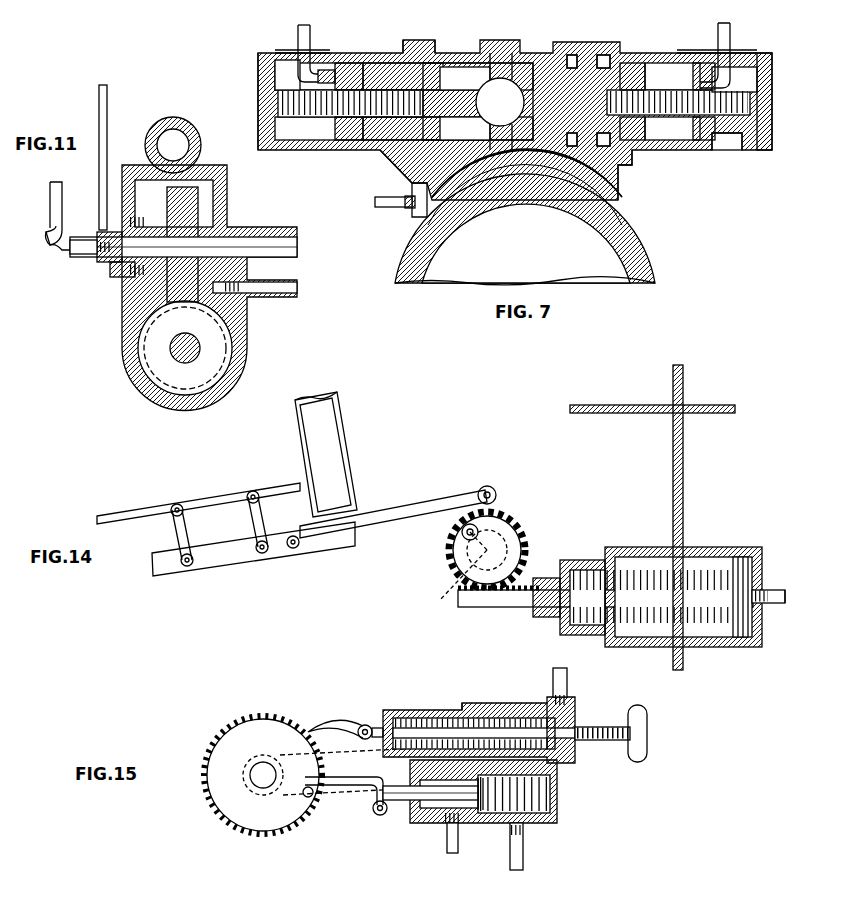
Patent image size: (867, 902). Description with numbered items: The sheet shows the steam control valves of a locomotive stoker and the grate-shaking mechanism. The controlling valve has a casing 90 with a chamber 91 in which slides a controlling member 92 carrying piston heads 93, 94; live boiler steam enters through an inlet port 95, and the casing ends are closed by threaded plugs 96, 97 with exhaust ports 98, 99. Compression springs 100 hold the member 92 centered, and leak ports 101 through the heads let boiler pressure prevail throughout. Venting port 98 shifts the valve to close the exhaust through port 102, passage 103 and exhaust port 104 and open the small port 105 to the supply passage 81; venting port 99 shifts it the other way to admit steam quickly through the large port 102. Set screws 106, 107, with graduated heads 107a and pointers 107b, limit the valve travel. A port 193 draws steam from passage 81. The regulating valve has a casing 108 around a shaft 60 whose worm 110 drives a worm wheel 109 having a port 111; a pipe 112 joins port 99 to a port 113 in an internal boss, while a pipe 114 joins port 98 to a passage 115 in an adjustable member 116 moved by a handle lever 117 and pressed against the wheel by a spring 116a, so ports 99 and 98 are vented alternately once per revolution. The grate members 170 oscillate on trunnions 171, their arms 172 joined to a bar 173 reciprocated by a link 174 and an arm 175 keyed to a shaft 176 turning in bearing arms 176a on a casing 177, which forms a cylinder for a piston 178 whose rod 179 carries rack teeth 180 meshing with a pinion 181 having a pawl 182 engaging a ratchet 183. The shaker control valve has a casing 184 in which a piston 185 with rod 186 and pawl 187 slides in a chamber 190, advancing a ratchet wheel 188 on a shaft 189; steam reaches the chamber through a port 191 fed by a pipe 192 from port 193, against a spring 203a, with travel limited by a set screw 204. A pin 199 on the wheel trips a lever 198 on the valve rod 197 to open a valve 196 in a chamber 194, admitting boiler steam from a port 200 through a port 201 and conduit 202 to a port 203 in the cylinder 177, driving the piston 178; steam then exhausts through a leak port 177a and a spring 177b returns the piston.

In FIG. 11, the shaft 60 is at (196, 345).
In FIG. 7, the supply passage 81 is at (508, 186).
In FIG. 7, the casing 90 is at (482, 66).
In FIG. 7, the chamber 91 is at (355, 65).
In FIG. 7, the controlling member 92 is at (478, 101).
In FIG. 7, the piston head 93 is at (400, 63).
In FIG. 7, the piston head 94 is at (635, 63).
In FIG. 7, the inlet port 95 is at (528, 66).
In FIG. 7, the threaded plug 96 is at (315, 142).
In FIG. 7, the threaded plug 97 is at (715, 140).
In FIG. 7, the exhaust port 98 is at (330, 70).
In FIG. 7, the exhaust port 99 is at (703, 63).
In FIG. 7, the compression spring 100 is at (342, 135).
In FIG. 7, the leak port 101 is at (443, 62).
In FIG. 7, the port 102 is at (572, 172).
In FIG. 7, the passage 103 is at (627, 168).
In FIG. 7, the exhaust port 104 is at (590, 82).
In FIG. 7, the port 105 is at (412, 192).
In FIG. 7, the set screw 106 is at (292, 96).
In FIG. 7, the set screw 107 is at (745, 115).
In FIG. 7, the graduated head 107a is at (258, 72).
In FIG. 7, the pointer 107b is at (292, 50).
In FIG. 11, the casing 108 is at (122, 328).
In FIG. 11, the worm wheel 109 is at (190, 225).
In FIG. 11, the worm 110 is at (205, 380).
In FIG. 11, the port 111 is at (205, 208).
In FIG. 7, the pipe 112 is at (730, 30).
In FIG. 11, the pipe 112 is at (295, 293).
In FIG. 11, the port 113 is at (240, 300).
In FIG. 7, the pipe 114 is at (304, 25).
In FIG. 11, the pipe 114 is at (50, 207).
In FIG. 11, the passage 115 is at (150, 185).
In FIG. 11, the adjustable member 116 is at (95, 260).
In FIG. 11, the spring 116a is at (122, 290).
In FIG. 11, the handle lever 117 is at (104, 126).
In FIG. 14, the grate member 170 is at (226, 498).
In FIG. 14, the trunnion 171 is at (255, 495).
In FIG. 14, the arm 172 is at (262, 520).
In FIG. 14, the bar 173 is at (218, 556).
In FIG. 14, the link 174 is at (383, 516).
In FIG. 14, the arm 175 is at (496, 497).
In FIG. 14, the shaft 176 is at (500, 545).
In FIG. 14, the bearing arm 176a is at (545, 575).
In FIG. 14, the casing 177 is at (627, 556).
In FIG. 14, the leak port 177a is at (750, 642).
In FIG. 14, the spring 177b is at (669, 640).
In FIG. 14, the piston 178 is at (745, 560).
In FIG. 14, the piston rod 179 is at (688, 590).
In FIG. 14, the rack teeth 180 is at (527, 607).
In FIG. 14, the pinion 181 is at (458, 578).
In FIG. 14, the pawl 182 is at (478, 495).
In FIG. 14, the ratchet 183 is at (480, 532).
In FIG. 15, the casing 184 is at (422, 712).
In FIG. 15, the piston 185 is at (546, 728).
In FIG. 15, the piston rod 186 is at (480, 735).
In FIG. 15, the pawl 187 is at (336, 725).
In FIG. 15, the ratchet wheel 188 is at (236, 718).
In FIG. 15, the shaft 189 is at (256, 775).
In FIG. 15, the chamber 190 is at (560, 732).
In FIG. 15, the port 191 is at (567, 700).
In FIG. 7, the pipe 192 is at (380, 207).
In FIG. 15, the pipe 192 is at (563, 676).
In FIG. 7, the port 193 is at (410, 212).
In FIG. 15, the chamber 194 is at (425, 783).
In FIG. 15, the valve 196 is at (462, 825).
In FIG. 15, the valve rod 197 is at (445, 798).
In FIG. 15, the lever 198 is at (362, 786).
In FIG. 15, the pin 199 is at (305, 796).
In FIG. 15, the port 200 is at (522, 838).
In FIG. 15, the port 201 is at (445, 822).
In FIG. 14, the conduit 202 is at (777, 604).
In FIG. 15, the conduit 202 is at (452, 854).
In FIG. 14, the port 203 is at (767, 590).
In FIG. 15, the spring 203a is at (507, 725).
In FIG. 15, the set screw 204 is at (620, 745).